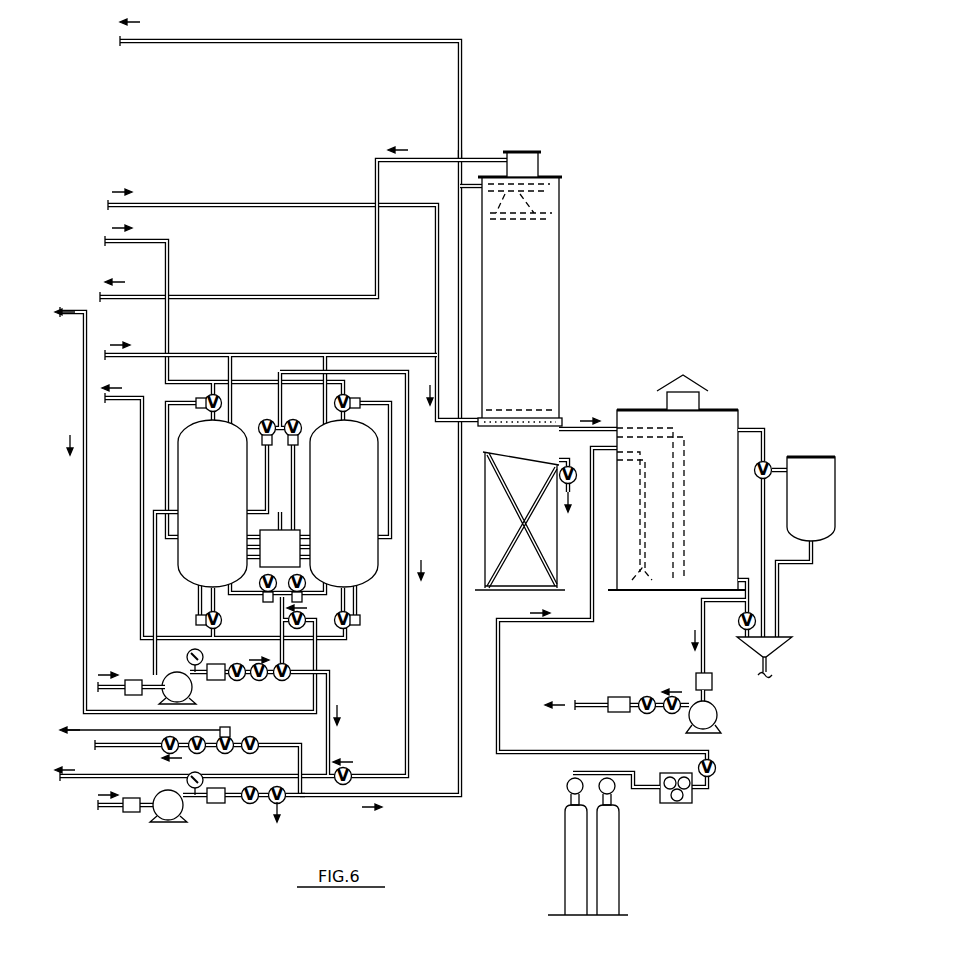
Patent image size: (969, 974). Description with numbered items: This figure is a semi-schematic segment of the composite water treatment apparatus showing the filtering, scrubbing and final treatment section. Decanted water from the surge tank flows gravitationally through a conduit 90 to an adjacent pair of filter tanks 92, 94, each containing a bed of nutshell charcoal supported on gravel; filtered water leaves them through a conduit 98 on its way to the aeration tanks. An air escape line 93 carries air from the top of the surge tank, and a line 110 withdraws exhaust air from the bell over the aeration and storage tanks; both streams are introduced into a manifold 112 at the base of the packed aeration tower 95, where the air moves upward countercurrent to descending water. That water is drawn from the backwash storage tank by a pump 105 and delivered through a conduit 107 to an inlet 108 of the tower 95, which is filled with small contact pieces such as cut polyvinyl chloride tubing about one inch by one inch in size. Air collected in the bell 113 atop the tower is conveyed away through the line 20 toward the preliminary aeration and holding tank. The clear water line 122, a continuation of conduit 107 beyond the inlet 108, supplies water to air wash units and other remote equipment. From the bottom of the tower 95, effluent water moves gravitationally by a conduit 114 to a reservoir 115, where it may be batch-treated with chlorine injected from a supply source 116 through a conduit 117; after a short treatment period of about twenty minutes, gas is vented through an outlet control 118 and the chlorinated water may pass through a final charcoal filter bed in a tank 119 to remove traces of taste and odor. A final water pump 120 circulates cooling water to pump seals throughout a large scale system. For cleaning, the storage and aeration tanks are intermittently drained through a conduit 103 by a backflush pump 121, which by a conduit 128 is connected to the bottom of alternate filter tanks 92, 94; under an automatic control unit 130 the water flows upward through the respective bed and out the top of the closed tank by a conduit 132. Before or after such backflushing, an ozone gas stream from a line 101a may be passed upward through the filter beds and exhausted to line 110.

The line 20 is at (262, 294).
The conduit 90 is at (167, 275).
The filter tank 92 is at (212, 511).
The air escape line 93 is at (230, 205).
The filter tank 94 is at (344, 511).
The packed aeration tower 95 is at (540, 262).
The conduit 98 is at (140, 432).
The line 101a is at (75, 543).
The conduit 103 is at (120, 688).
The pump 105 is at (190, 805).
The conduit 107 is at (458, 635).
The inlet 108 is at (482, 186).
The line 110 is at (343, 355).
The manifold 112 is at (562, 420).
The bell 113 is at (527, 163).
The conduit 114 is at (605, 432).
The reservoir 115 is at (733, 428).
The supply source 116 is at (572, 850).
The conduit 117 is at (502, 697).
The outlet control 118 is at (690, 380).
The tank 119 is at (818, 507).
The final water pump 120 is at (712, 712).
The backflush pump 121 is at (190, 693).
The clear water line 122 is at (265, 43).
The conduit 128 is at (280, 632).
The automatic control unit 130 is at (290, 530).
The conduit 132 is at (282, 422).